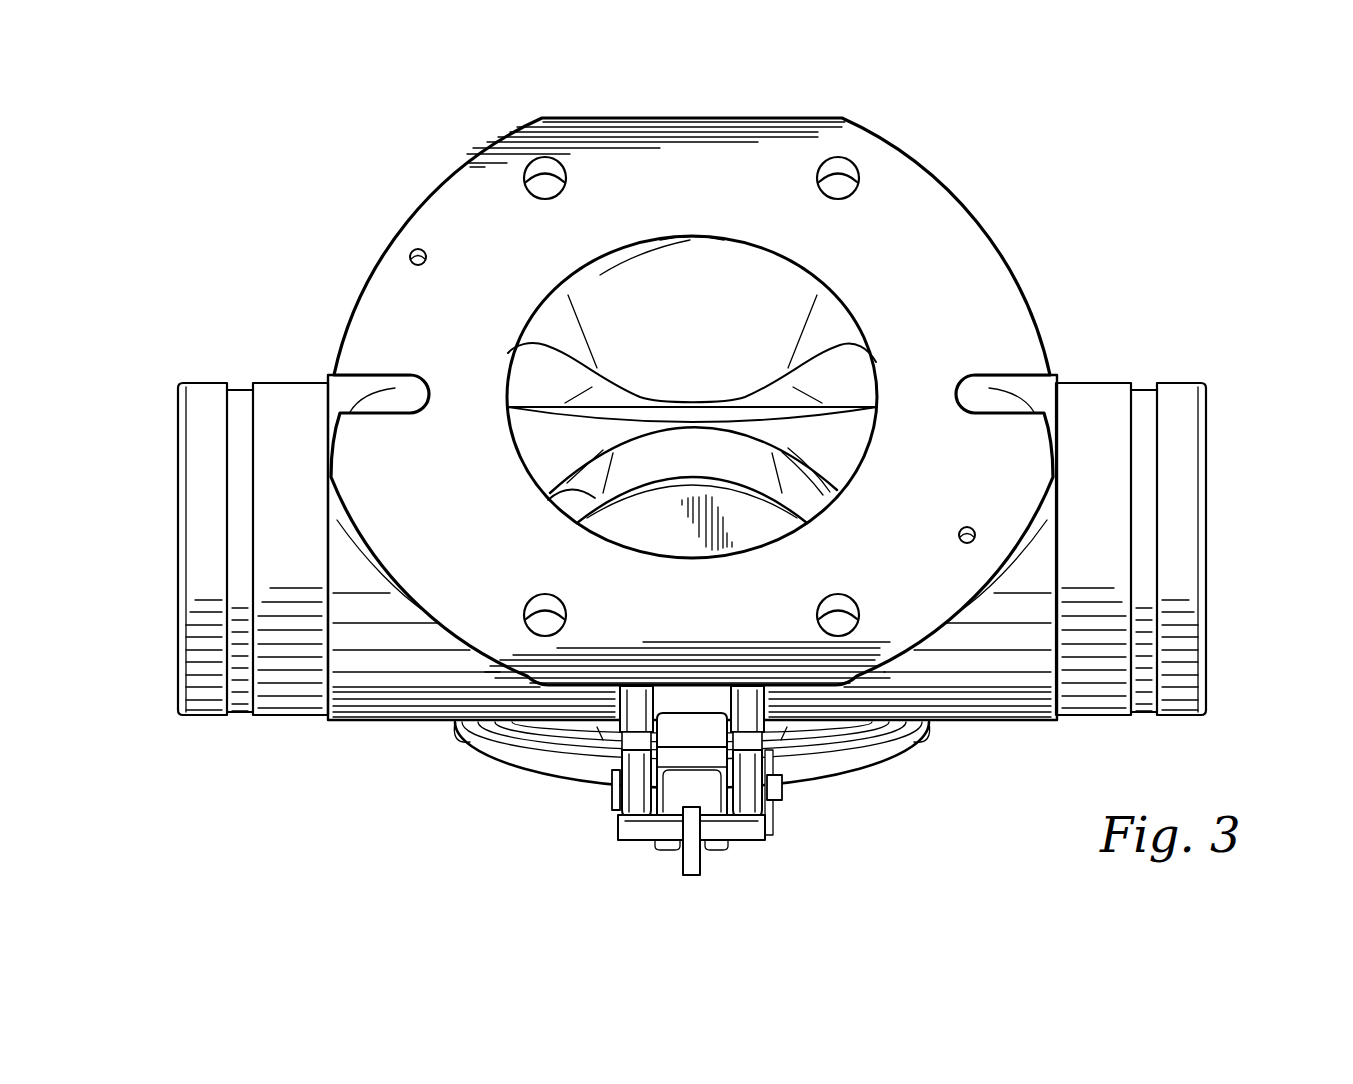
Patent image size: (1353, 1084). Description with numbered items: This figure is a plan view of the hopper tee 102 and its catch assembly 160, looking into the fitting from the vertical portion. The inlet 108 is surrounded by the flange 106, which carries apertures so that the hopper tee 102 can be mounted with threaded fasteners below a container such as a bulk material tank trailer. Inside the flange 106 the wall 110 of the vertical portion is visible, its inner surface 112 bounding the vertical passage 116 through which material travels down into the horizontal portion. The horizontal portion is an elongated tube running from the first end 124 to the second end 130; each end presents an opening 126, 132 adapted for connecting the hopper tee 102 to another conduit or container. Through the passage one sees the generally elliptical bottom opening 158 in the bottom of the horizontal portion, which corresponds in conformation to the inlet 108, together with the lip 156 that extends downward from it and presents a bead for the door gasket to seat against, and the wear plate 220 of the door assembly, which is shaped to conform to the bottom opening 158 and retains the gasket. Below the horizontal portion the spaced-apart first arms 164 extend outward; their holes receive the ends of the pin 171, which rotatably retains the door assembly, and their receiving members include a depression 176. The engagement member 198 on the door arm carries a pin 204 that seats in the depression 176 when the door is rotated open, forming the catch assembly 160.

The hopper tee 102 is at (205, 203).
The flange 106 is at (773, 118).
The inlet 108 is at (812, 267).
The wall 110 is at (708, 241).
The inner surface 112 is at (712, 345).
The vertical passage 116 is at (620, 264).
The first end 124 is at (178, 457).
The opening 126 is at (178, 530).
The second end 130 is at (1206, 428).
The opening 132 is at (1206, 505).
The lip 156 is at (643, 462).
The bottom opening 158 is at (592, 492).
The catch assembly 160 is at (815, 827).
The first arms 164 is at (641, 705).
The pin 171 is at (785, 791).
The depression 176 is at (598, 752).
The engagement member 198 is at (747, 862).
The pin 204 is at (630, 835).
The wear plate 220 is at (742, 533).